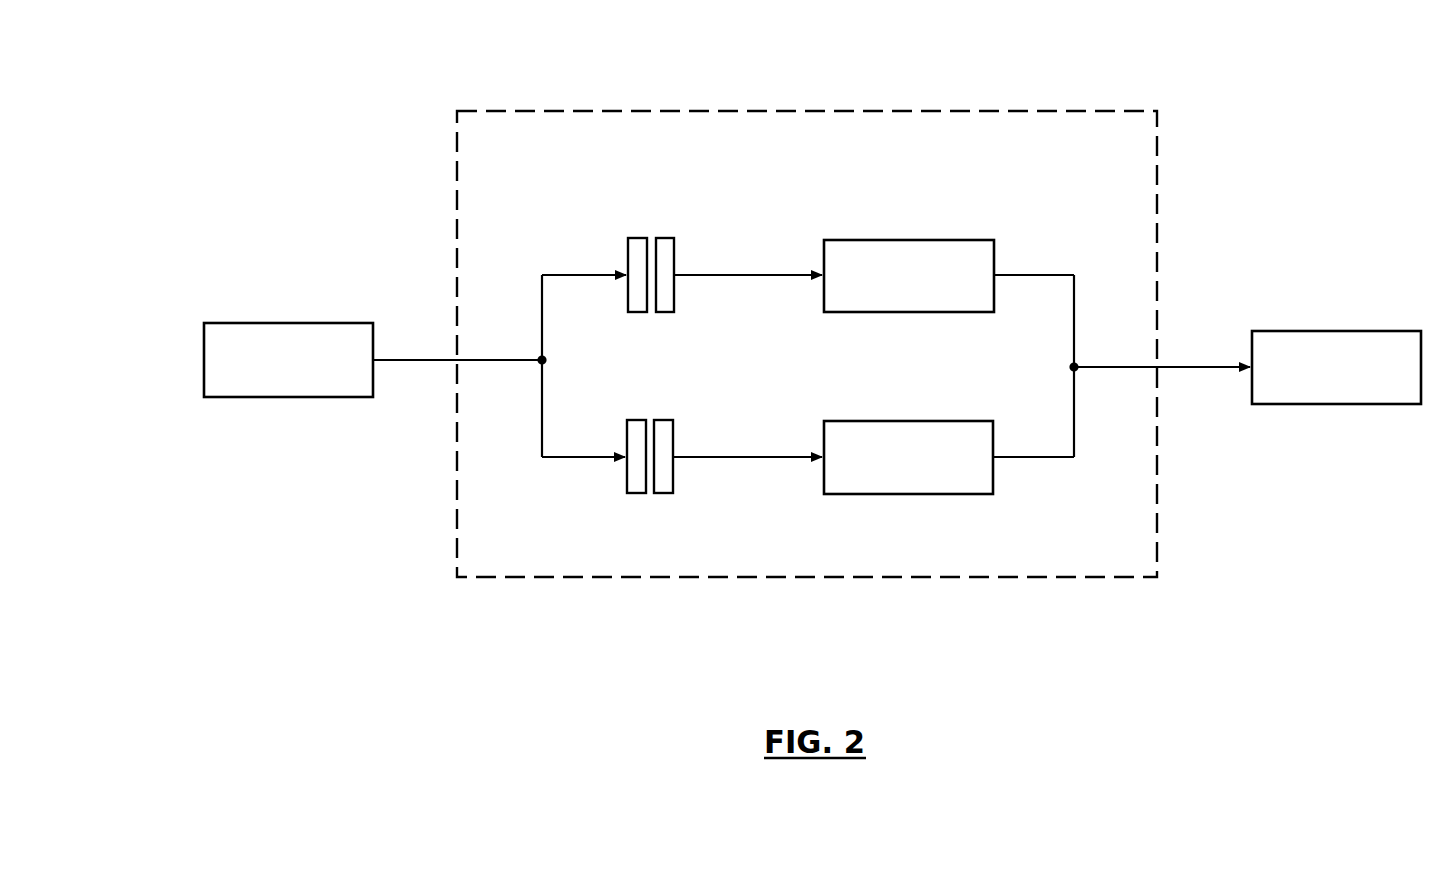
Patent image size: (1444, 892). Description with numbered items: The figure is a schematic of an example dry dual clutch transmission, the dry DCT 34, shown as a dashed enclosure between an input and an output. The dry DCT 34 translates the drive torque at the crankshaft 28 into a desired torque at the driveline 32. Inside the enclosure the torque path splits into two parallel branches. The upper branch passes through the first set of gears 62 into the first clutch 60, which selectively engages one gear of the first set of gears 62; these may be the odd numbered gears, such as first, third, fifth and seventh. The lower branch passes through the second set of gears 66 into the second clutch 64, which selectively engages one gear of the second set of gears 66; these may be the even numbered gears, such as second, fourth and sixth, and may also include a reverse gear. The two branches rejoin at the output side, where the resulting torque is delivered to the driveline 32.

The crankshaft 28 is at (300, 323).
The driveline 32 is at (1338, 331).
The dry dual clutch transmission 34 is at (809, 111).
The first clutch 60 is at (910, 240).
The first set of gears 62 is at (693, 247).
The second clutch 64 is at (911, 421).
The second set of gears 66 is at (692, 430).